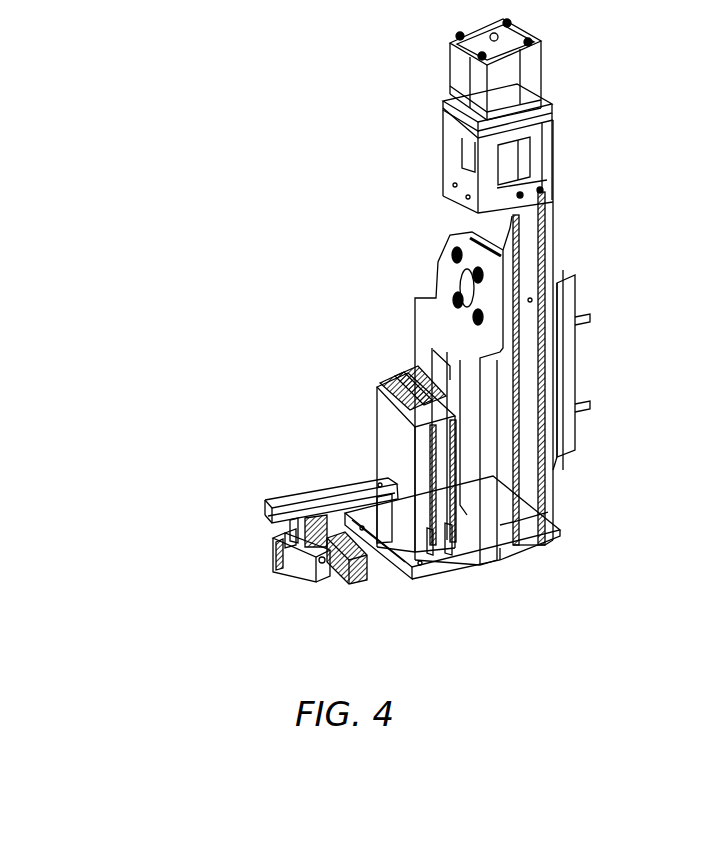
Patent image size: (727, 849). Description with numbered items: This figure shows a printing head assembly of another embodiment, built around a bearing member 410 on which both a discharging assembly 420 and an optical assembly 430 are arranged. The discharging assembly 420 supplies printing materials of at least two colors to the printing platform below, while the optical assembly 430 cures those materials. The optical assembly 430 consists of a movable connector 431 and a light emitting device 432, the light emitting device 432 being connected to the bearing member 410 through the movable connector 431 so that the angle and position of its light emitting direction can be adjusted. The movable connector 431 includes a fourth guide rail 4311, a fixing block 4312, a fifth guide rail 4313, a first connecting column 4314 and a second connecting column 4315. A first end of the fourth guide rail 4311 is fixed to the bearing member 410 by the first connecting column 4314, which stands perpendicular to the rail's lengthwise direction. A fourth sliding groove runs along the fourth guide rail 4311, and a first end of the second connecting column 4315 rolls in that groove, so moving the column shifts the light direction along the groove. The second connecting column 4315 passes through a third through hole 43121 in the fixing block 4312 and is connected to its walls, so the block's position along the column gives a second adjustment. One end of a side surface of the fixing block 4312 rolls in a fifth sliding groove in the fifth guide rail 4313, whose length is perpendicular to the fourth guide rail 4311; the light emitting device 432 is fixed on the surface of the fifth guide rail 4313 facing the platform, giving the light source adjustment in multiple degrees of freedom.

The bearing member 410 is at (414, 330).
The discharging assembly 420 is at (467, 490).
The optical assembly 430 is at (291, 507).
The movable connector 431 is at (326, 491).
The fourth guide rail 4311 is at (333, 485).
The fixing block 4312 is at (277, 560).
The third through hole 43121 is at (280, 546).
The fifth guide rail 4313 is at (395, 571).
The first connecting column 4314 is at (373, 487).
The second connecting column 4315 is at (267, 503).
The light emitting device 432 is at (347, 586).